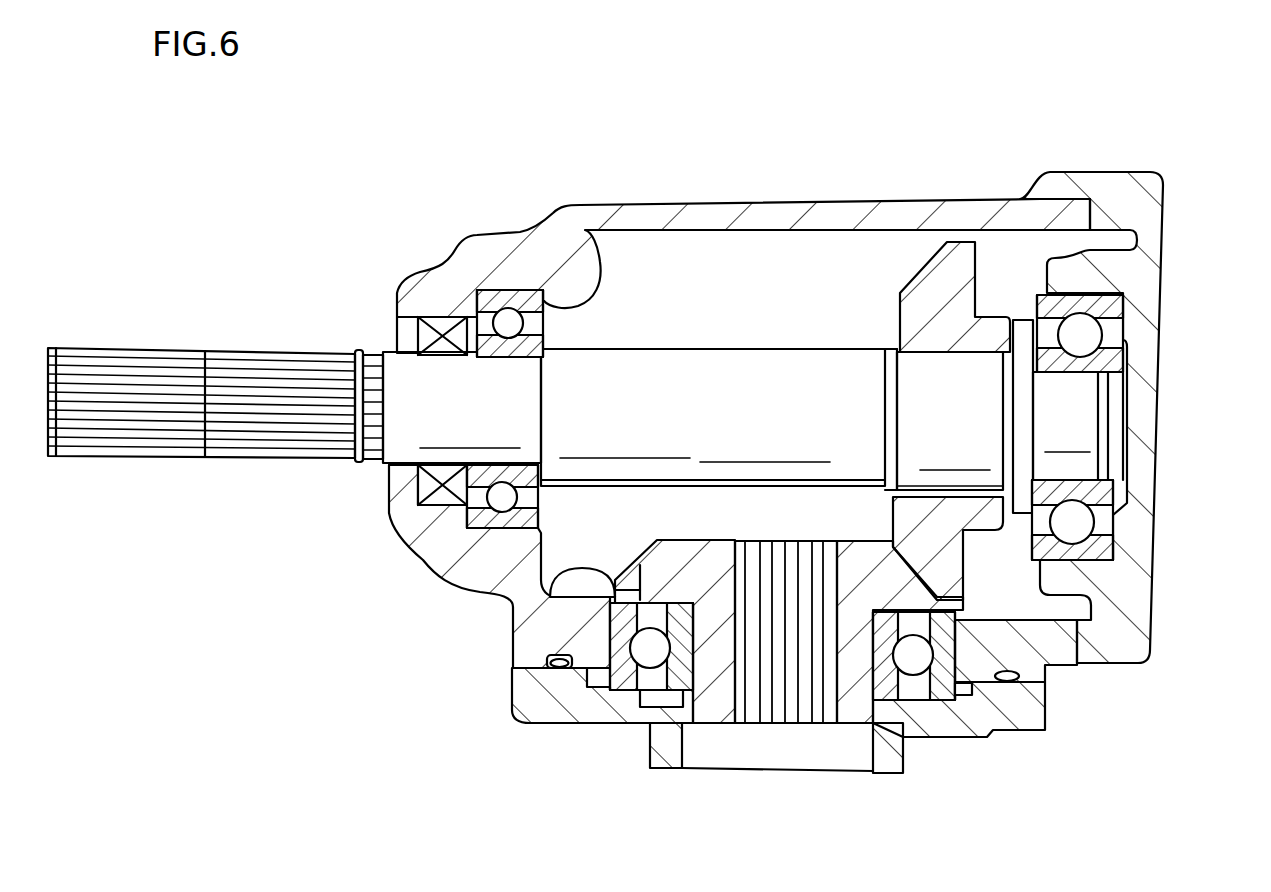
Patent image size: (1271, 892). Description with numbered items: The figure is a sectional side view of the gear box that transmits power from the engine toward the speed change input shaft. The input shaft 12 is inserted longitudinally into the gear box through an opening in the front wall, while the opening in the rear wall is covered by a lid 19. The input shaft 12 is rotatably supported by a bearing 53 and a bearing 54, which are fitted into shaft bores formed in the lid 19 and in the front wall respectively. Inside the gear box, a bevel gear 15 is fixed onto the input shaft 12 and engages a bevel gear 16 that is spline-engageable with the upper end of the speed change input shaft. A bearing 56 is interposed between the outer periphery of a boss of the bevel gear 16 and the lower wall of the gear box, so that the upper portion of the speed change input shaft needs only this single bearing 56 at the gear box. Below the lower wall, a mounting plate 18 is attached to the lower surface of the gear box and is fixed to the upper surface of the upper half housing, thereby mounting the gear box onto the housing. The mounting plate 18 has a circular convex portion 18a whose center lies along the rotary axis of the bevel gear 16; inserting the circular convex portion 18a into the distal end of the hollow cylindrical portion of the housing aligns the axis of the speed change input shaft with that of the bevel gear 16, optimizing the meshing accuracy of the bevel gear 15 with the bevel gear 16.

The input shaft 12 is at (718, 348).
The bevel gear 15 is at (925, 268).
The bevel gear 16 is at (510, 610).
The mounting plate 18 is at (523, 720).
The circular convex portion 18a is at (907, 765).
The lid 19 is at (1160, 193).
The bearing 53 is at (1122, 307).
The bearing 54 is at (586, 232).
The bearing 56 is at (572, 725).